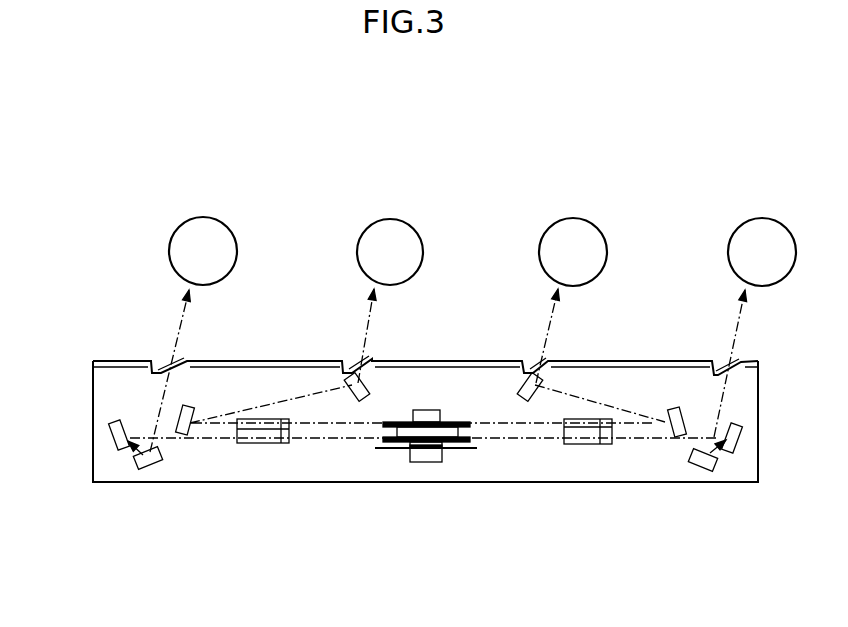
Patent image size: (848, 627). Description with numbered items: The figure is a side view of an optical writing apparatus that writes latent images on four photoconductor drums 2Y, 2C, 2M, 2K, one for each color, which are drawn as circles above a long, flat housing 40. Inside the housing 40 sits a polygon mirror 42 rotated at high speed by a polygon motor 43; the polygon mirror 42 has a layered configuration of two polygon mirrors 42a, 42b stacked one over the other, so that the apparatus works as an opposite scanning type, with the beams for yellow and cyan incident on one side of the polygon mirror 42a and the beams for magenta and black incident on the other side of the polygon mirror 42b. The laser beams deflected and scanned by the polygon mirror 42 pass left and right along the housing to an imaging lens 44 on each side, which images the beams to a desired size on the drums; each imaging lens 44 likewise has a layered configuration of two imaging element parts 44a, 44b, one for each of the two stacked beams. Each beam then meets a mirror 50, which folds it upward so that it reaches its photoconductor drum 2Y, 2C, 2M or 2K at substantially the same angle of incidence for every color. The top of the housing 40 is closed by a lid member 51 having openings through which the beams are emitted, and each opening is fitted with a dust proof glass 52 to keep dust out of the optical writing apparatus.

The photoconductor drum 2Y is at (190, 217).
The photoconductor drum 2C is at (383, 218).
The photoconductor drum 2M is at (563, 218).
The photoconductor drum 2K is at (752, 218).
The housing 40 is at (93, 415).
The lid member 51 is at (112, 360).
The dust proof glass 52 is at (160, 362).
The mirror 50 is at (190, 408).
The imaging lens 44 is at (439, 509).
The imaging element part 44a is at (281, 443).
The imaging element part 44b is at (257, 443).
The polygon mirror 42 is at (461, 501).
The polygon mirror 42a is at (457, 440).
The polygon mirror 42b is at (429, 485).
The polygon motor 43 is at (425, 457).